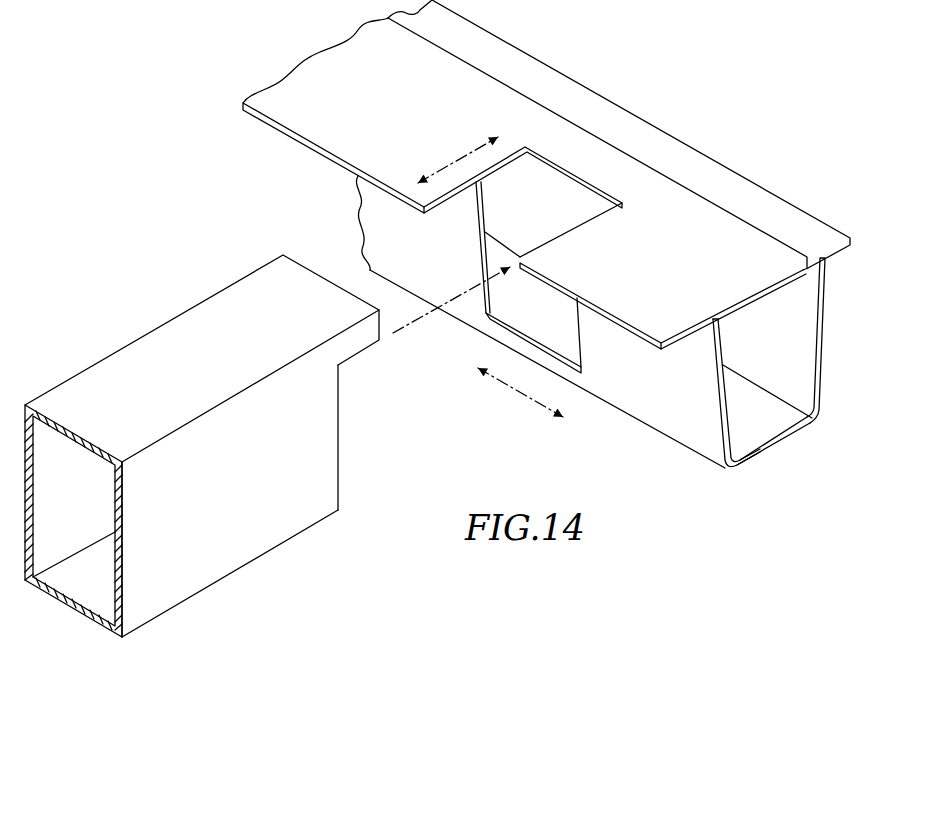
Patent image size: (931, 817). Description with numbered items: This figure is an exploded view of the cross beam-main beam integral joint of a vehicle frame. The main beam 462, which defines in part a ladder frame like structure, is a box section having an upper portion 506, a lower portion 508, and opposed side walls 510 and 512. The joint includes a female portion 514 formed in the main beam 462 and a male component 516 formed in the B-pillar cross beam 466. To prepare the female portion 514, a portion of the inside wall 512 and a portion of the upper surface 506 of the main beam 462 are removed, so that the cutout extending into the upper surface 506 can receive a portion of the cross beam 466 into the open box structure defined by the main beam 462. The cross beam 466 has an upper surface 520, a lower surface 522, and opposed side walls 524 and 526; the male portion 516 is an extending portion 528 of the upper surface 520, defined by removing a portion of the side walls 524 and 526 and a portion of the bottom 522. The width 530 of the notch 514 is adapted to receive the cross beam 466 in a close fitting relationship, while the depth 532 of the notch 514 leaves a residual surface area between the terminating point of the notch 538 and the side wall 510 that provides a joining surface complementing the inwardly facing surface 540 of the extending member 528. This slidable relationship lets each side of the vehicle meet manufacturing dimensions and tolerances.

The main beam 462 is at (548, 268).
The B-pillar cross beam 466 is at (219, 445).
The upper portion 506 is at (657, 168).
The lower portion 508 is at (757, 460).
The side wall 510 is at (558, 68).
The inside wall 512 is at (646, 422).
The female portion 514 is at (479, 318).
The male component 516 is at (340, 462).
The upper surface 520 is at (219, 445).
The lower surface 522 is at (195, 597).
The side wall 524 is at (247, 523).
The side wall 526 is at (50, 383).
The extending portion 528 is at (305, 288).
The width 530 is at (517, 393).
The depth 532 is at (456, 164).
The terminating point of the notch 538 is at (598, 184).
The inwardly facing surface 540 is at (357, 360).